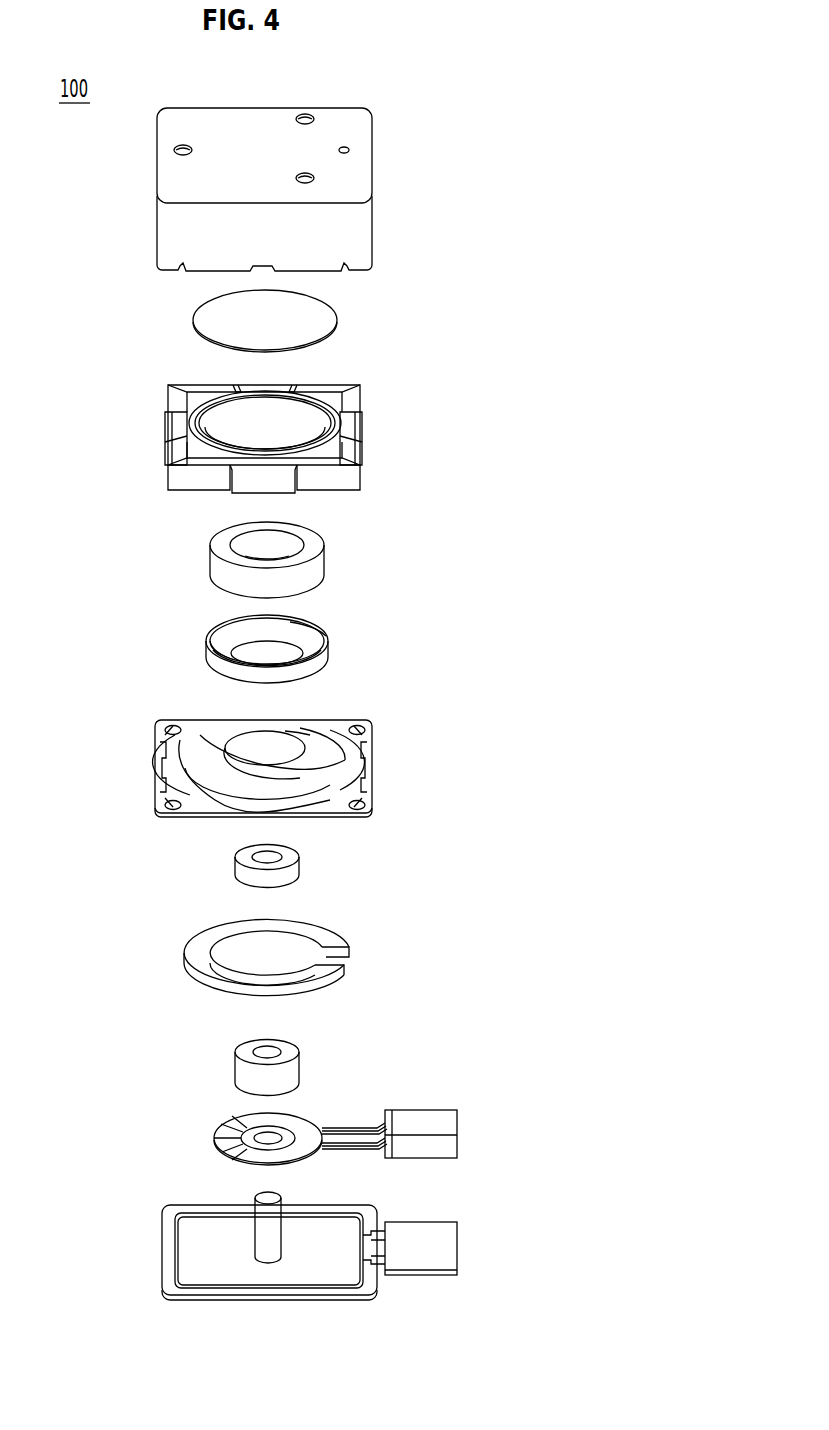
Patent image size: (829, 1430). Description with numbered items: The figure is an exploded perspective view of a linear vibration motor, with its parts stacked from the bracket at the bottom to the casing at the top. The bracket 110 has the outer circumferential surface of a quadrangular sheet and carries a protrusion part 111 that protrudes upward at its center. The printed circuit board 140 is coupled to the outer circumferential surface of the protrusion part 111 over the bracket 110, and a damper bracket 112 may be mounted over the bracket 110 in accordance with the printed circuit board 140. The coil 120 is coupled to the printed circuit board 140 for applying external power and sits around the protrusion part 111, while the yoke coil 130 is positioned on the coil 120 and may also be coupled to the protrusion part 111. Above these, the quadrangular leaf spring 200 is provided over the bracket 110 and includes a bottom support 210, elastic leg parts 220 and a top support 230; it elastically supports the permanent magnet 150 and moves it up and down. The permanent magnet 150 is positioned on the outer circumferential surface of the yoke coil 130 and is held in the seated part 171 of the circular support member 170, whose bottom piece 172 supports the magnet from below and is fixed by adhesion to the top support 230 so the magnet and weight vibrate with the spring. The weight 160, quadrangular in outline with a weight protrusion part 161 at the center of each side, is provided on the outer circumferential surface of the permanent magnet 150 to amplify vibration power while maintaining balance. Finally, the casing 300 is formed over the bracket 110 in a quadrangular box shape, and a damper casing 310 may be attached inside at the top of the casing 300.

The casing 300 is at (359, 222).
The damper casing 310 is at (325, 317).
The weight 160 is at (345, 480).
The weight protrusion part 161 is at (238, 390).
The permanent magnet 150 is at (318, 564).
The support member 170 is at (345, 644).
The seated part 171 is at (327, 630).
The bottom piece 172 is at (225, 648).
The quadrangular leaf spring 200 is at (243, 760).
The bottom support 210 is at (230, 815).
The elastic leg parts 220 is at (180, 728).
The top support 230 is at (200, 734).
The yoke coil 130 is at (300, 871).
The damper bracket 112 is at (188, 953).
The coil 120 is at (238, 1070).
The printed circuit board 140 is at (245, 1132).
The bracket 110 is at (196, 1265).
The protrusion part 111 is at (265, 1232).